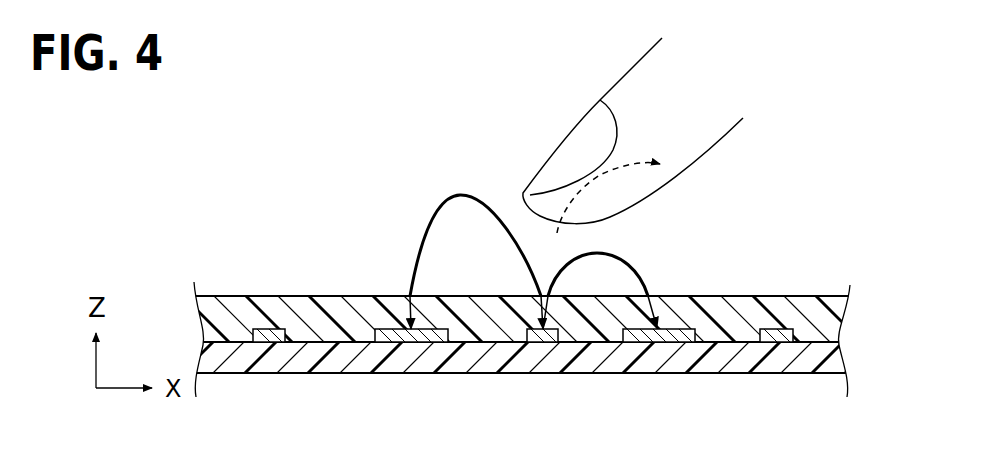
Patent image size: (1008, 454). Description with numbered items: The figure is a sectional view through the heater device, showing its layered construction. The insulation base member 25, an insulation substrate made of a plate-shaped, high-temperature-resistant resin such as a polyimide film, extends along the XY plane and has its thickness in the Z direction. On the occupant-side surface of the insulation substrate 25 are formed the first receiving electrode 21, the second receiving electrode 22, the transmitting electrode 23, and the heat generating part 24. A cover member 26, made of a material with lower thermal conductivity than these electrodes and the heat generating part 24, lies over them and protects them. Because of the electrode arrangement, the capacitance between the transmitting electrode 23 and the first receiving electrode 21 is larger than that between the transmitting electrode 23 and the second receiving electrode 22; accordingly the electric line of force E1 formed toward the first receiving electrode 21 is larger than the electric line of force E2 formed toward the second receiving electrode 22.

The first receiving electrode 21 is at (377, 329).
The second receiving electrode 22 is at (684, 329).
The transmitting electrode 23 is at (532, 343).
The heat generating part 24 is at (284, 329).
The insulation base member 25 is at (707, 367).
The cover member 26 is at (812, 302).
The electric line of force E1 is at (458, 193).
The electric line of force E2 is at (647, 280).